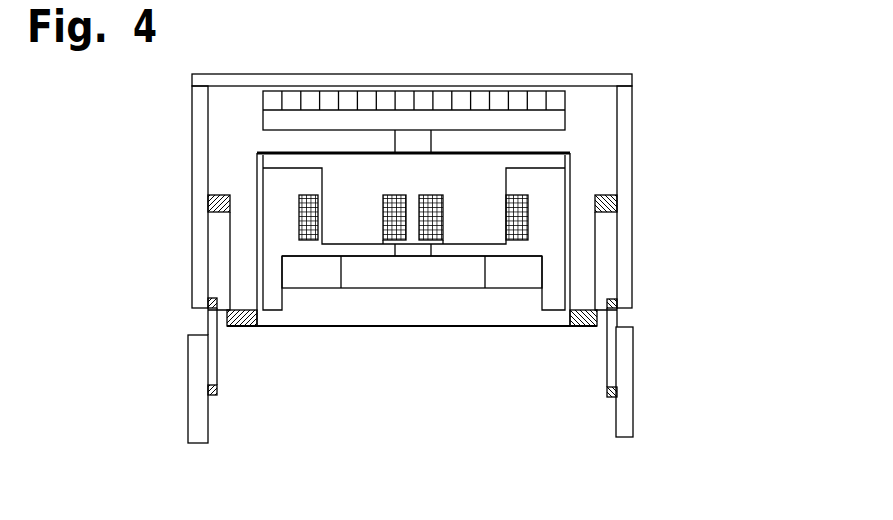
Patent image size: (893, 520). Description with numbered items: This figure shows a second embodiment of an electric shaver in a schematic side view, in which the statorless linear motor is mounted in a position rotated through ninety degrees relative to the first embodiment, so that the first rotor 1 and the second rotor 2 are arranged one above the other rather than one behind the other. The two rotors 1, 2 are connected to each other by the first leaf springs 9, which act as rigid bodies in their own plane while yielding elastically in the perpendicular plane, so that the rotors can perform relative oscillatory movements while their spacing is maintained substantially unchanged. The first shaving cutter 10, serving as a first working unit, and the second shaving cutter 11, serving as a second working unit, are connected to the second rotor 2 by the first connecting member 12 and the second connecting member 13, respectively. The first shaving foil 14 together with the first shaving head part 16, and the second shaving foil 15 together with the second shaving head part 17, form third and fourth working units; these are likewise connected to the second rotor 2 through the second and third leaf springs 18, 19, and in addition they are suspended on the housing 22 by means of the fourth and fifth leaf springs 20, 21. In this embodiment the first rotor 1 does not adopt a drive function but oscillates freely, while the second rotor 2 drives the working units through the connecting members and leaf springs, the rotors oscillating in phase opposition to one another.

The first rotor 1 is at (290, 214).
The second rotor 2 is at (434, 340).
The first leaf springs 9 is at (570, 178).
The first shaving cutter 10 is at (513, 122).
The second shaving cutter 11 is at (553, 117).
The first connecting member 12 is at (272, 138).
The second connecting member 13 is at (406, 137).
The first shaving foil 14 is at (412, 43).
The second shaving foil 15 is at (520, 78).
The first shaving head part 16 is at (477, 188).
The second shaving head part 17 is at (625, 100).
The second leaf spring 18 is at (485, 252).
The third leaf spring 19 is at (597, 272).
The fourth leaf spring 20 is at (485, 346).
The fifth leaf spring 21 is at (608, 320).
The housing 22 is at (623, 390).